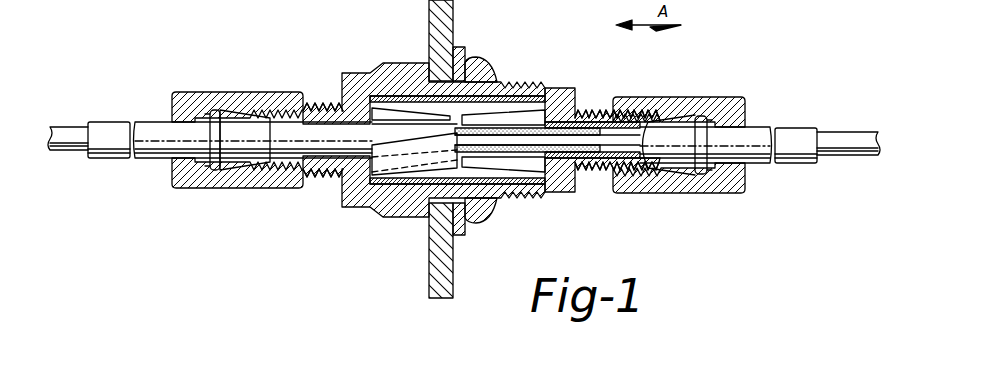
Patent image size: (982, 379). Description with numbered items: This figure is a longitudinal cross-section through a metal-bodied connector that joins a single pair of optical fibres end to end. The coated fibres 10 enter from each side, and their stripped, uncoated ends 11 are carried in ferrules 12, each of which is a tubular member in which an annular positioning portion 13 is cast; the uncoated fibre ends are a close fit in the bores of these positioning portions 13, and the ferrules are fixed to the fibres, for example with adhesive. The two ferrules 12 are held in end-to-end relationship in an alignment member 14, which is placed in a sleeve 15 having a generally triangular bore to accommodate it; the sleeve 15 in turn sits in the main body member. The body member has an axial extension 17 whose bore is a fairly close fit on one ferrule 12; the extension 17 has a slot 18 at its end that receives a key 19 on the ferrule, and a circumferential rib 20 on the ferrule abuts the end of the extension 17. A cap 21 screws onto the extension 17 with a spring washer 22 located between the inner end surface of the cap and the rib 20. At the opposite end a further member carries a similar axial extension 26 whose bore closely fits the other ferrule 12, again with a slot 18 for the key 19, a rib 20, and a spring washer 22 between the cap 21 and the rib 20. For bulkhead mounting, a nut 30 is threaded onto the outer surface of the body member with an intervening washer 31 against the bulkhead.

The coated fibres 10 is at (62, 126).
The uncoated ends of the fibres 11 is at (582, 138).
The ferrules 12 is at (112, 124).
The annular positioning portion 13 is at (516, 98).
The alignment member 14 is at (415, 146).
The sleeve 15 is at (520, 192).
The axial extension 17 is at (600, 173).
The slot 18 is at (265, 183).
The key 19 is at (238, 162).
The circumferential rib 20 is at (213, 168).
The cap 21 is at (655, 100).
The spring washer 22 is at (211, 109).
The axial extension 26 is at (325, 180).
The nut 30 is at (488, 60).
The washer 31 is at (456, 48).